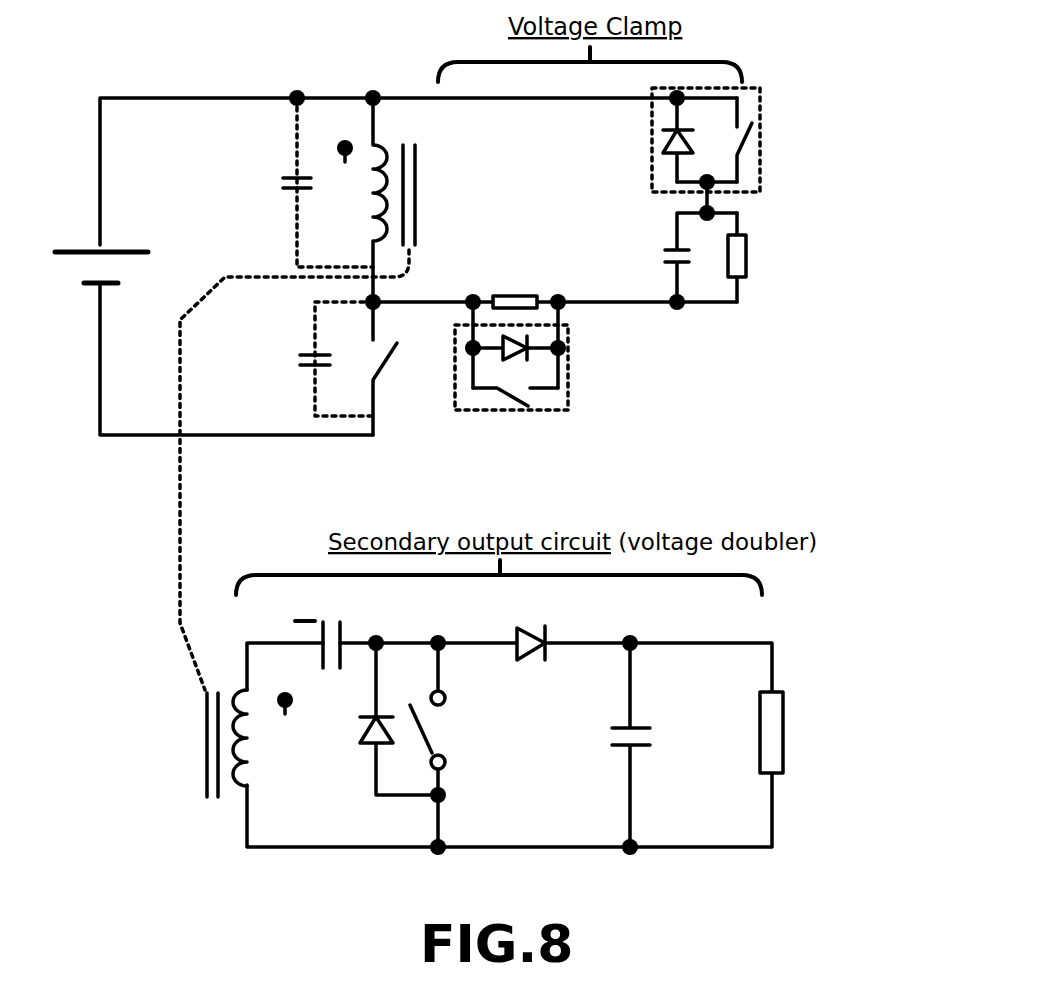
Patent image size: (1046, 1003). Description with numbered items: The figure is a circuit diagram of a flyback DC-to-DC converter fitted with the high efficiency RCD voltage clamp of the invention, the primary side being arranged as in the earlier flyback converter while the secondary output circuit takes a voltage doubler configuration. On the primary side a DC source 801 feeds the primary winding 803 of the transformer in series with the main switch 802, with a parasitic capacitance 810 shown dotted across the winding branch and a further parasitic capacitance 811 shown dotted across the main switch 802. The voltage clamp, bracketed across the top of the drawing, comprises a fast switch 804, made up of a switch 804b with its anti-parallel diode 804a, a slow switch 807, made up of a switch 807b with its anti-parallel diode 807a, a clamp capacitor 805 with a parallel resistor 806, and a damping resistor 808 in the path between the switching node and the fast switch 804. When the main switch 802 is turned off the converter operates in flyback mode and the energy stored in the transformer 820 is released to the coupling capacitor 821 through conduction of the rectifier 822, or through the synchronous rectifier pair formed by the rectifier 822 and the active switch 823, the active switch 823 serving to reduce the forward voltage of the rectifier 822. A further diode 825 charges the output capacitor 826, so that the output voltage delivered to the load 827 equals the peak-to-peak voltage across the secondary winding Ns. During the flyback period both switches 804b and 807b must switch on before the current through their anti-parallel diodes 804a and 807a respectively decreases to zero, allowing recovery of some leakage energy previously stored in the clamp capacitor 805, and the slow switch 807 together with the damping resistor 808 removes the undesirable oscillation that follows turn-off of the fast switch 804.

The DC power source (battery) 801 is at (93, 288).
The main switch 802 is at (385, 362).
The primary winding of transformer 803 is at (356, 195).
The fast switch 804 is at (596, 385).
The anti-parallel diode 804a is at (538, 353).
The switch 804b is at (512, 403).
The clamp capacitor 805 is at (660, 250).
The clamp resistor 806 is at (748, 257).
The slow switch 807 is at (720, 125).
The anti-parallel diode 807a is at (663, 140).
The switch 807b is at (752, 148).
The damping resistor 808 is at (512, 296).
The parasitic capacitor 810 is at (277, 176).
The parasitic capacitor 811 is at (300, 355).
The transformer 820 is at (200, 752).
The coupling capacitor 821 is at (370, 620).
The rectifier 822 is at (368, 745).
The active switch 823 is at (436, 733).
The diode 825 is at (556, 634).
The output capacitor 826 is at (617, 750).
The load 827 is at (780, 778).